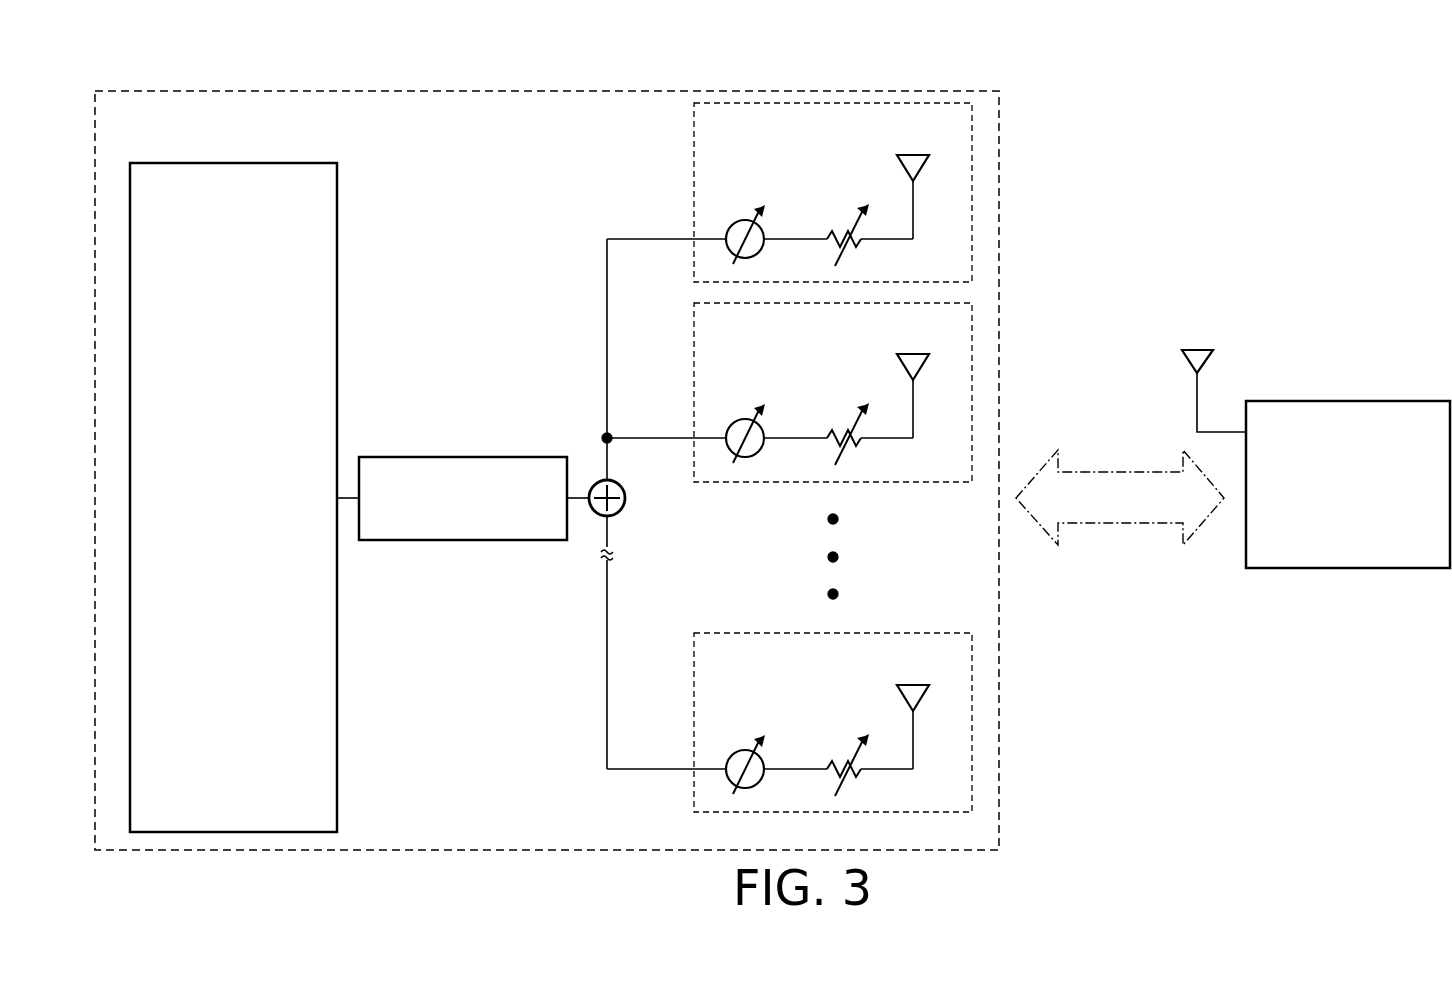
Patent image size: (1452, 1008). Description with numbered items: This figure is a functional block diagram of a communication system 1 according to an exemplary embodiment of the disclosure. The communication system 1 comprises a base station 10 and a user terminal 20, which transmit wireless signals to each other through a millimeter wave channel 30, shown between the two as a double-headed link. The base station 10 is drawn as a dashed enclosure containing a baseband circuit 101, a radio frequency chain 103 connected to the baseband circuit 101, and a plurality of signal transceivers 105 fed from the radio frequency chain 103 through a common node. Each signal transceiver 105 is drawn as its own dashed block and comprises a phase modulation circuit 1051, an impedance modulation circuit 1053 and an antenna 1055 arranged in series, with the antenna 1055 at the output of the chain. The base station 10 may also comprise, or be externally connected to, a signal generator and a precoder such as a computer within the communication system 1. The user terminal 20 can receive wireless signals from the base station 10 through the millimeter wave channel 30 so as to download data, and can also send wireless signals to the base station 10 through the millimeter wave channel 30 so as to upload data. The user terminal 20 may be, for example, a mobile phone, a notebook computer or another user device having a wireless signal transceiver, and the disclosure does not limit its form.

The communication system 1 is at (97, 47).
The base station 10 is at (137, 90).
The baseband circuit 101 is at (163, 163).
The radio frequency chain 103 is at (390, 457).
The signal transceiver 105 is at (694, 123).
The phase modulation circuit 1051 is at (731, 222).
The impedance modulation circuit 1053 is at (843, 222).
The antenna 1055 is at (937, 138).
The user terminal 20 is at (1398, 400).
The millimeter wave channel 30 is at (1105, 470).